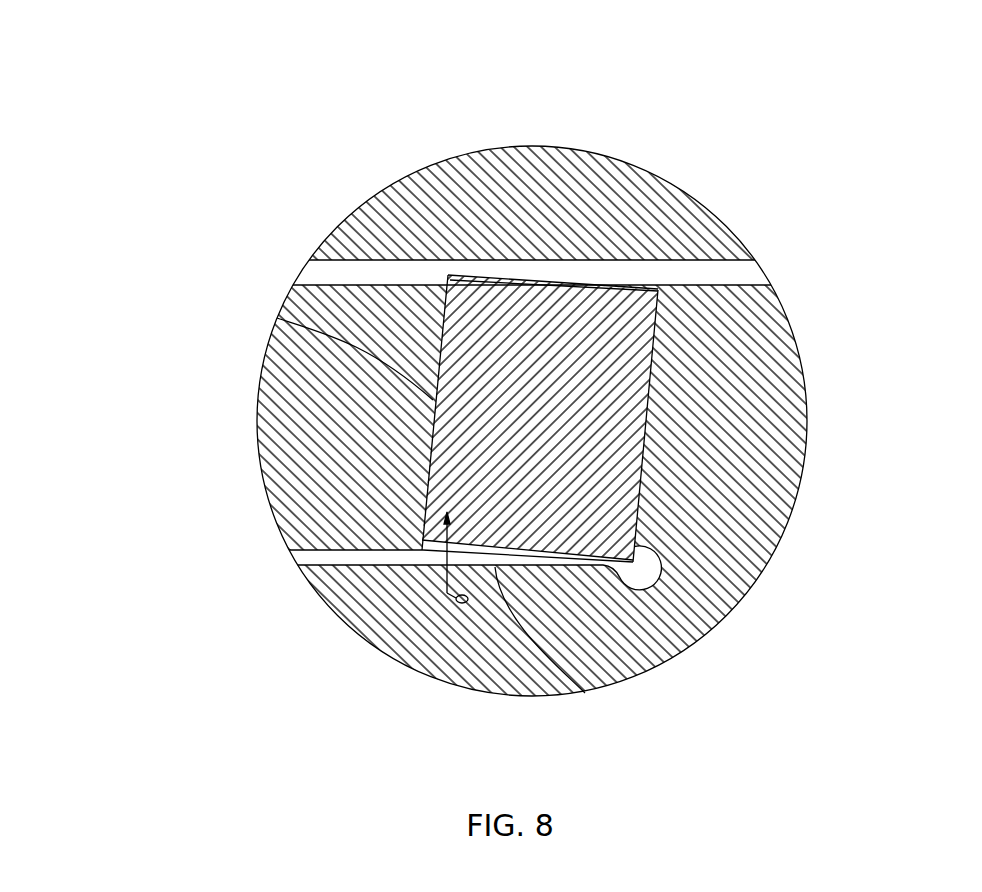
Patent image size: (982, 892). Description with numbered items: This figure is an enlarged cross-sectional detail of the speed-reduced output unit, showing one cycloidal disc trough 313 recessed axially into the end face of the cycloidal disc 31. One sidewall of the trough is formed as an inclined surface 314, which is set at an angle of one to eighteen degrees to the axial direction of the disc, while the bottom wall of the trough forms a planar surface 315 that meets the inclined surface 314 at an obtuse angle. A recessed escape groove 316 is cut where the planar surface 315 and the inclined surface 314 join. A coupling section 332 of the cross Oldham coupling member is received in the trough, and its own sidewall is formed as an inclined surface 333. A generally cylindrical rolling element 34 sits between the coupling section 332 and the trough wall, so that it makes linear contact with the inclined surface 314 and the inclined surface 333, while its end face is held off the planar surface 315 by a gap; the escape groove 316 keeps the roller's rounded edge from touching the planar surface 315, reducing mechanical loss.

The cycloidal disc 31 is at (720, 467).
The rolling element 34 is at (547, 330).
The cycloidal disc trough 313 is at (355, 567).
The inclined surface 314 is at (650, 403).
The planar surface 315 is at (585, 693).
The escape groove 316 is at (660, 588).
The coupling section 332 is at (338, 435).
The inclined surface 333 is at (277, 318).